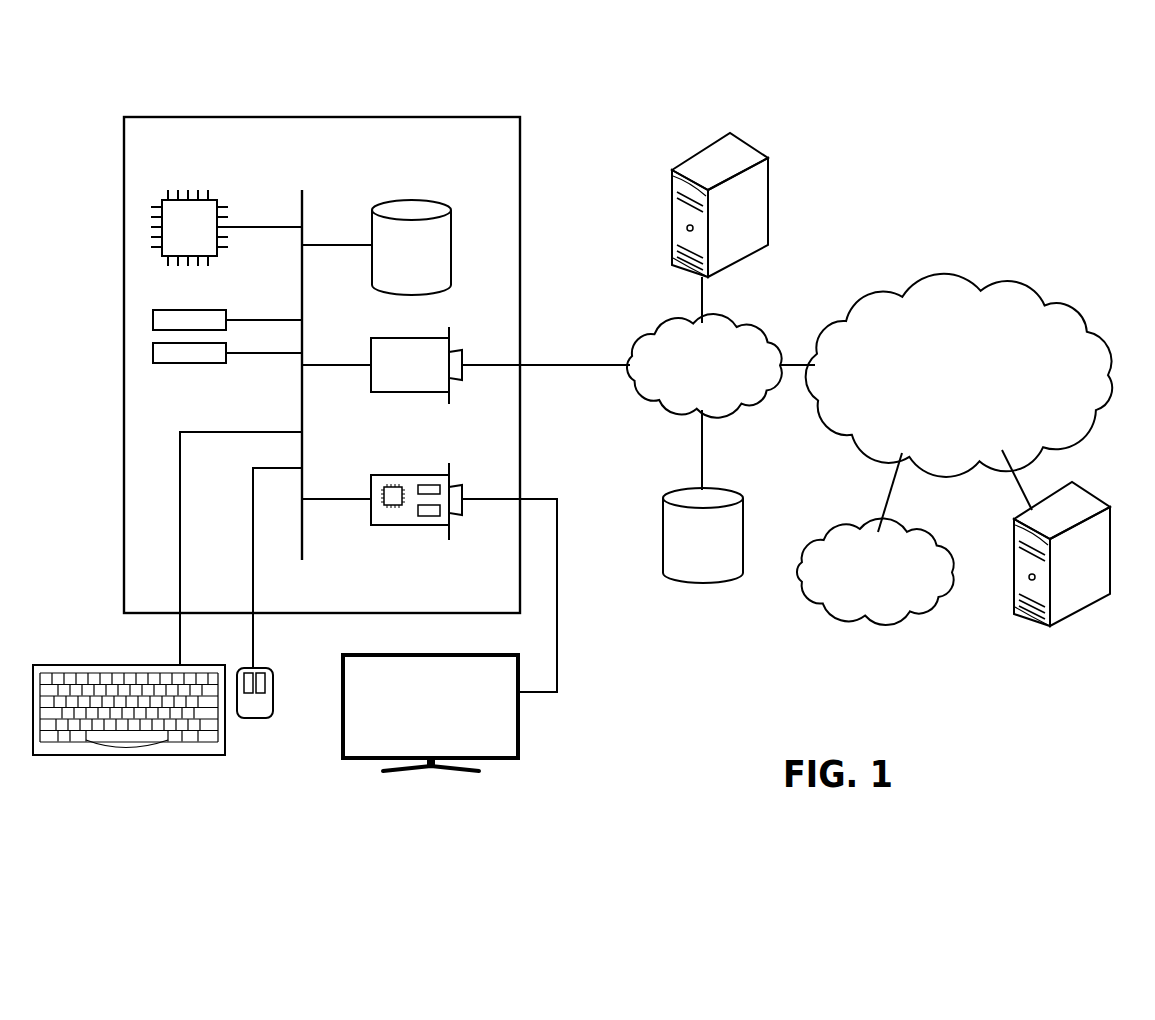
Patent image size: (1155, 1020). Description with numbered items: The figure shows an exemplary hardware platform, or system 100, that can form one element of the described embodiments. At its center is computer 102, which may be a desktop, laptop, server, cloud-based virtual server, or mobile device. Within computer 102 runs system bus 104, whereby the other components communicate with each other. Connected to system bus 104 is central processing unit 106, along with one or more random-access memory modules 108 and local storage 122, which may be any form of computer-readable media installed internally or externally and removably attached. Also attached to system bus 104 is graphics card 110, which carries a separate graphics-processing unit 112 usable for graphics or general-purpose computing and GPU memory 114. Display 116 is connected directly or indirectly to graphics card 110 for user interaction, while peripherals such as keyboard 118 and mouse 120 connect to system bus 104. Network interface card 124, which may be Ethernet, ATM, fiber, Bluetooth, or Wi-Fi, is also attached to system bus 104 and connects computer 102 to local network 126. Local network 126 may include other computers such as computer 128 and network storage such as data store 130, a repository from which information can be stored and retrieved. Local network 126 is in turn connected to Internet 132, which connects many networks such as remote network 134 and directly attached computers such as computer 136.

The system 100 is at (1043, 118).
The computer 102 is at (478, 117).
The system bus 104 is at (305, 200).
The central processing unit 106 is at (213, 198).
The random-access memory modules 108 is at (226, 352).
The graphics card 110 is at (429, 561).
The graphics-processing unit 112 is at (392, 508).
The GPU memory 114 is at (437, 516).
The display 116 is at (520, 742).
The keyboard 118 is at (132, 755).
The mouse 120 is at (253, 718).
The local storage 122 is at (452, 228).
The network interface card 124 is at (370, 348).
The local network 126 is at (755, 323).
The computer 128 is at (753, 147).
The data store 130 is at (735, 490).
The Internet 132 is at (1000, 293).
The remote network 134 is at (925, 530).
The computer 136 is at (1085, 490).